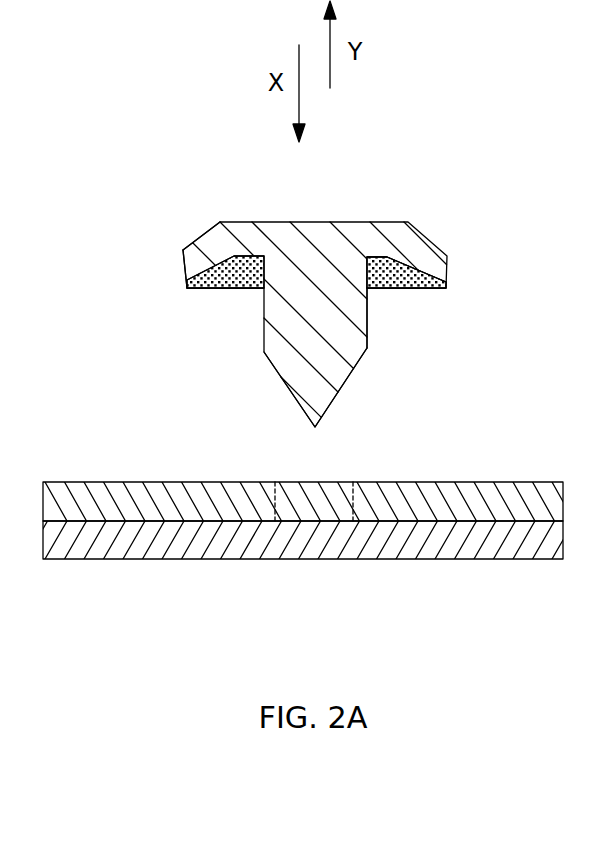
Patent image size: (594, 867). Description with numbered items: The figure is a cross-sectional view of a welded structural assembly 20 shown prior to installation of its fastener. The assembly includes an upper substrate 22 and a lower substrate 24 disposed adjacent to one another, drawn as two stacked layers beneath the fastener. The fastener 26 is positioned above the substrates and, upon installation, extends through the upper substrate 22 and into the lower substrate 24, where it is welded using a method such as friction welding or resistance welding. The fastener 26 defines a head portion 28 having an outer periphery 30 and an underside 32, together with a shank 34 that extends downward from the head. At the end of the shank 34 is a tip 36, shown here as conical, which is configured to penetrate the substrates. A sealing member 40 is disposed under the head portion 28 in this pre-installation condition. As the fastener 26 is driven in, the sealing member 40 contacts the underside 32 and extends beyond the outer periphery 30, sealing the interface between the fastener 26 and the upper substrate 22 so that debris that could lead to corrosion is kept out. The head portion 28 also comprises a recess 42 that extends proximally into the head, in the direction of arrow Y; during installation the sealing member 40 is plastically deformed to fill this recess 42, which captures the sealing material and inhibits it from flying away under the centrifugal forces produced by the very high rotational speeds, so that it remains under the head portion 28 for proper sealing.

The welded structural assembly 20 is at (323, 287).
The upper substrate 22 is at (475, 492).
The lower substrate 24 is at (145, 540).
The fastener 26 is at (295, 250).
The head portion 28 is at (203, 228).
The outer periphery 30 is at (177, 265).
The underside 32 is at (212, 297).
The shank 34 is at (342, 322).
The tip 36 is at (307, 385).
The sealing member 40 is at (382, 262).
The recess 42 is at (390, 285).